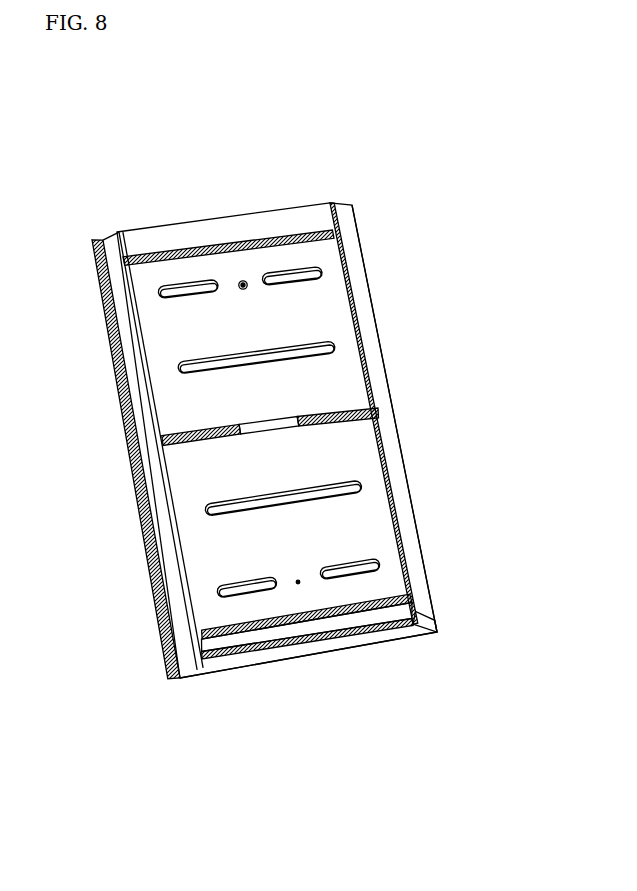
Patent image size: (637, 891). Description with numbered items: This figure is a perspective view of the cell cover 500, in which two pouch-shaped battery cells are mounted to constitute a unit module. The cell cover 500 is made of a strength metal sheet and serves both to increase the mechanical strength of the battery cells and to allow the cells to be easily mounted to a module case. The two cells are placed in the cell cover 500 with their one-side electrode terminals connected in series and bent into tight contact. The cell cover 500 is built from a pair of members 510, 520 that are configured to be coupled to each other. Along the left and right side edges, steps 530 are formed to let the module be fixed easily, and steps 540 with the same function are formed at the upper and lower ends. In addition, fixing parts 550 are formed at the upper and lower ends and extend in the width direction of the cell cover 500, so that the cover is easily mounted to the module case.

The cell cover 500 is at (68, 143).
The member 510 is at (227, 660).
The member 520 is at (303, 661).
The steps 530 is at (151, 540).
The steps 540 is at (255, 226).
The fixing parts 550 is at (388, 593).